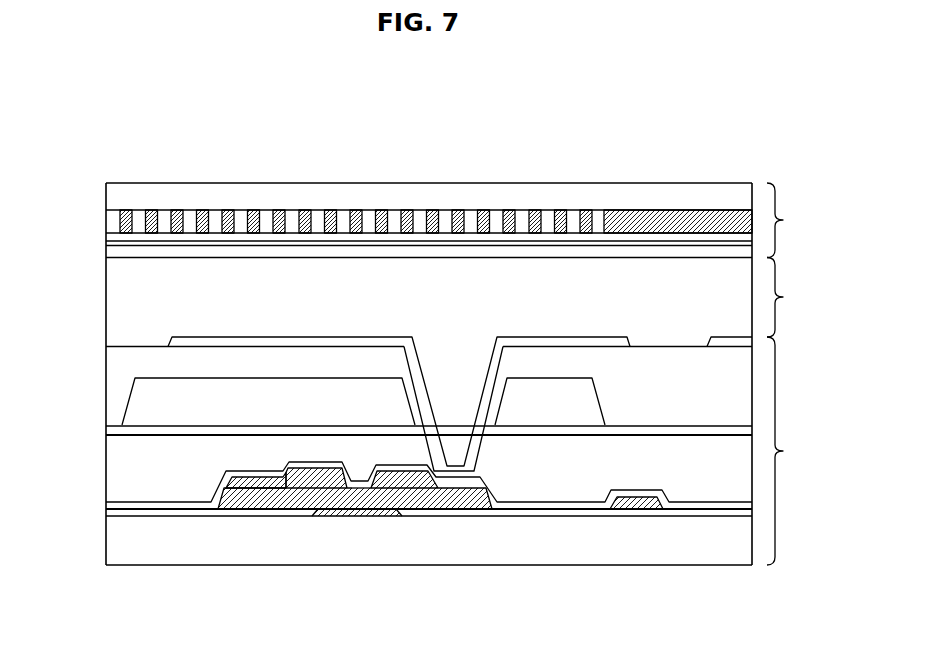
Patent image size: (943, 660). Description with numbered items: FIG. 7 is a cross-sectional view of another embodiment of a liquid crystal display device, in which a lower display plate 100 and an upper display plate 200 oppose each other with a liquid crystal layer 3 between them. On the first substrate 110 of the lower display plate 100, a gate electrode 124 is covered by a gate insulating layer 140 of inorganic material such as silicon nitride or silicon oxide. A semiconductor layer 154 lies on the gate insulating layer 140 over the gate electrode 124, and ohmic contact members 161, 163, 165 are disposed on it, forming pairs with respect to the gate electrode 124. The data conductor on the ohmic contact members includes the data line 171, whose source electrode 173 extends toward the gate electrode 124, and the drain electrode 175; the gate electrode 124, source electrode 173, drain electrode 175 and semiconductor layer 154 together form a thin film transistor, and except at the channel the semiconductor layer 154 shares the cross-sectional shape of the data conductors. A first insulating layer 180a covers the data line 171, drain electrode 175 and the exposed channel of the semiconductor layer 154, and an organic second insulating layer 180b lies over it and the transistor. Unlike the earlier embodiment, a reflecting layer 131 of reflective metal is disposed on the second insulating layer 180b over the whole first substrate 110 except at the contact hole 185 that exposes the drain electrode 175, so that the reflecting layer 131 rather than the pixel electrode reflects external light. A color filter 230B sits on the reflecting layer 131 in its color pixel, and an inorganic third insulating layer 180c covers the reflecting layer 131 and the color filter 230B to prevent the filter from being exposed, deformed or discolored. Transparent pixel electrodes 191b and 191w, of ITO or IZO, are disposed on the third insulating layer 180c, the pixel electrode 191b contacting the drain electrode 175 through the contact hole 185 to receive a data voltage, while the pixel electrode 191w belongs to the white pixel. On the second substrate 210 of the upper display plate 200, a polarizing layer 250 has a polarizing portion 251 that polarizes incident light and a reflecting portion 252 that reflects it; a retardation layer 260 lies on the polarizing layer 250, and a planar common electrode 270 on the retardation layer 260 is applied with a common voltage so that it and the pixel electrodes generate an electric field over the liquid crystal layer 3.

The second substrate 210 is at (320, 200).
The polarizing layer 250 is at (429, 161).
The polarizing portion 251 is at (531, 210).
The reflecting portion 252 is at (678, 182).
The color filter 230B is at (128, 394).
The retardation layer 260 is at (105, 240).
The common electrode 270 is at (105, 252).
The upper display plate 200 is at (795, 220).
The liquid crystal layer 3 is at (452, 298).
The lower display plate 100 is at (795, 451).
The third insulating layer 180c is at (118, 363).
The pixel electrode 191b is at (532, 340).
The contact hole 185 is at (488, 404).
The pixel electrode 191w is at (724, 337).
The reflecting layer 131 is at (105, 429).
The second insulating layer 180b is at (150, 473).
The first insulating layer 180a is at (568, 507).
The data line 171 is at (247, 481).
The source electrode 173 is at (322, 477).
The drain electrode 175 is at (400, 478).
The ohmic contact member 161 is at (262, 500).
The ohmic contact member 163 is at (337, 496).
The semiconductor layer 154 is at (432, 503).
The ohmic contact member 165 is at (453, 495).
The gate insulating layer 140 is at (535, 513).
The gate electrode 124 is at (357, 513).
The first substrate 110 is at (503, 545).